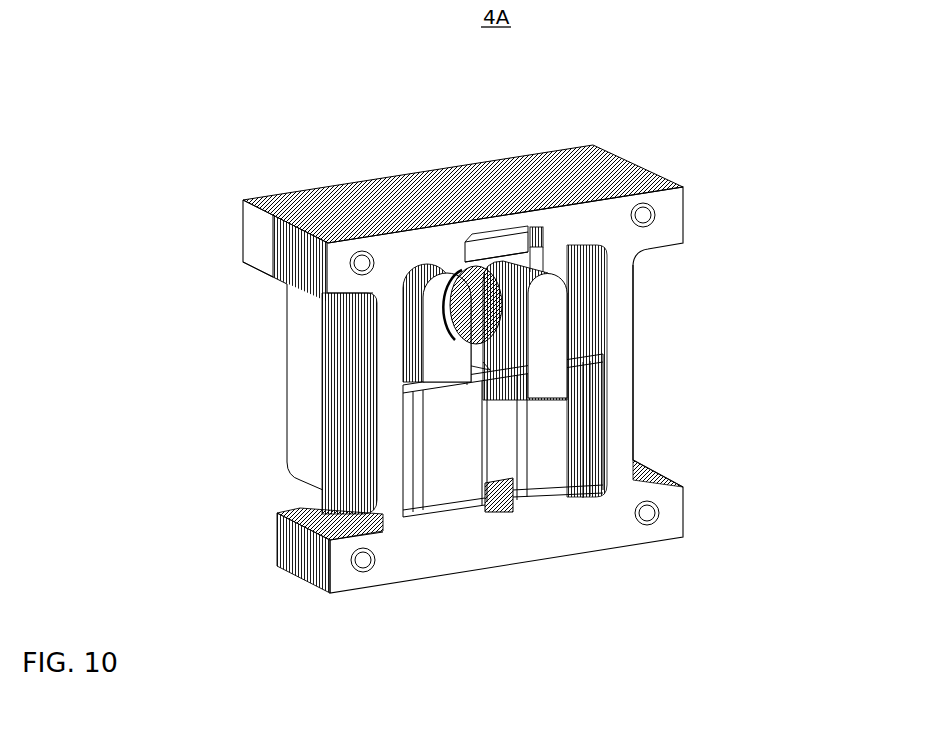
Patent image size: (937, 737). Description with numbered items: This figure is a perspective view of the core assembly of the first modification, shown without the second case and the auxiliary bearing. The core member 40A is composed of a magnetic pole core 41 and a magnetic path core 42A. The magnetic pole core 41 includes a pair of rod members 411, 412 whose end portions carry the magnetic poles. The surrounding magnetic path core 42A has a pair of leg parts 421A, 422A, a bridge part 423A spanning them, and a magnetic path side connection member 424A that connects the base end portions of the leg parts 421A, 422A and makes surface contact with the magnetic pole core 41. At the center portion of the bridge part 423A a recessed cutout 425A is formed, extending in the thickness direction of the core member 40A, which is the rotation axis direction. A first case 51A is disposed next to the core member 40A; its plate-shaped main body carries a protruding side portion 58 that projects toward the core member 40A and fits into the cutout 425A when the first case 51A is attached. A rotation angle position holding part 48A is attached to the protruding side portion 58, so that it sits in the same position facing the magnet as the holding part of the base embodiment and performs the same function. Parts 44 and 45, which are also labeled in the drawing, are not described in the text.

The core member 40A is at (685, 240).
The magnetic pole core 41 is at (298, 548).
The magnetic path core 42A is at (640, 348).
The bobbin 44 is at (583, 432).
The bobbin flange 45 is at (437, 427).
The rotation angle position holding part 48A is at (527, 258).
The first case 51A is at (247, 223).
The protruding side portion 58 is at (493, 248).
The rod member 411 is at (553, 347).
The rod member 412 is at (438, 330).
The leg part 421A is at (627, 448).
The leg part 422A is at (343, 370).
The bridge part 423A is at (432, 246).
The magnetic path side connection member 424A is at (323, 553).
The recessed cutout 425A is at (521, 230).